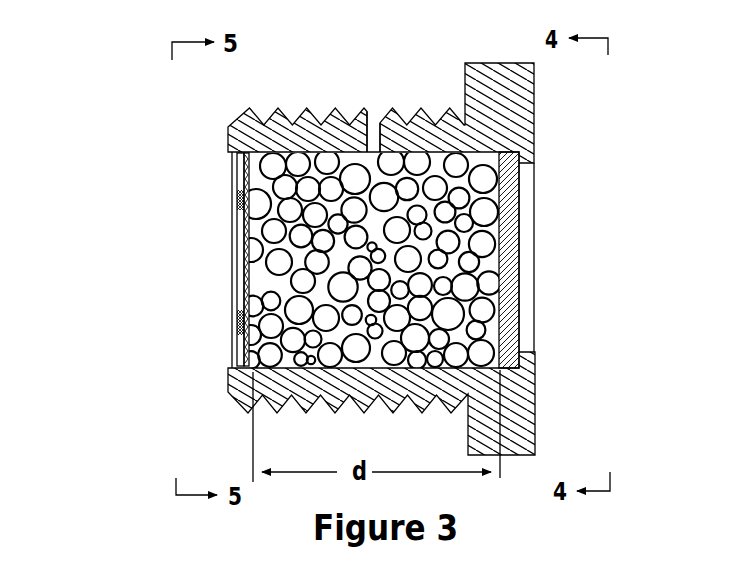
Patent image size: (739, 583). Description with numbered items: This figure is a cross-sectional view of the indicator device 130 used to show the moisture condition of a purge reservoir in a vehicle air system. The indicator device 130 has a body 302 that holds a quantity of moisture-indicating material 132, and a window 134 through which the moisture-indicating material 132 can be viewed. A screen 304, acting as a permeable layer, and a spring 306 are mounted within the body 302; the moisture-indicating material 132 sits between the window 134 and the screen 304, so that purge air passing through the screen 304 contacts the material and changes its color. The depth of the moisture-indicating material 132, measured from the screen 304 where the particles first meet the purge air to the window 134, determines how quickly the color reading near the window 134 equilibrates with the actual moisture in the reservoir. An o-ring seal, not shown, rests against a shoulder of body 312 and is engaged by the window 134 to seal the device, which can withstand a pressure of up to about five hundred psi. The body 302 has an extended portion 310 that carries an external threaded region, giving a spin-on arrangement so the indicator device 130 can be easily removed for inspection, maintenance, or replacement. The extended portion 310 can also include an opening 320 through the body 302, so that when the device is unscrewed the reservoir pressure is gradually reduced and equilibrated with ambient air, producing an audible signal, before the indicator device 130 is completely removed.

The indicator device 130 is at (370, 236).
The body 302 is at (238, 380).
The screen 304 is at (238, 245).
The spring 306 is at (245, 322).
The moisture-indicating material 132 is at (292, 343).
The window 134 is at (508, 323).
The extended portion 310 is at (445, 91).
The shoulder of body 312 is at (253, 127).
The opening 320 is at (375, 132).